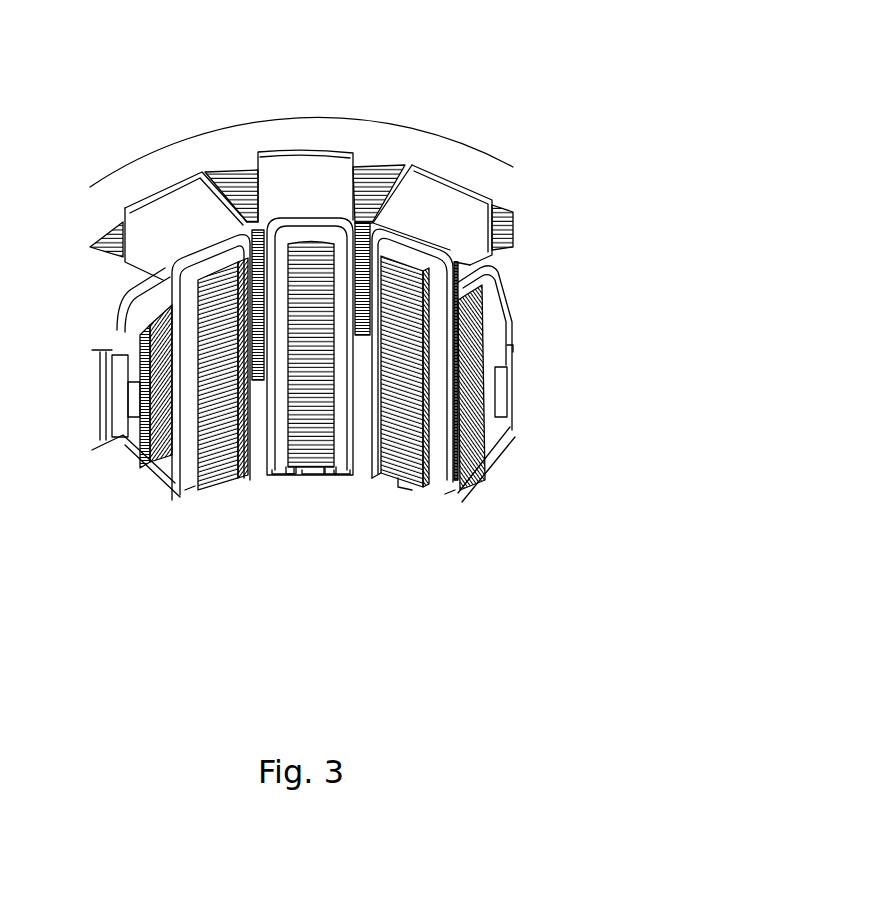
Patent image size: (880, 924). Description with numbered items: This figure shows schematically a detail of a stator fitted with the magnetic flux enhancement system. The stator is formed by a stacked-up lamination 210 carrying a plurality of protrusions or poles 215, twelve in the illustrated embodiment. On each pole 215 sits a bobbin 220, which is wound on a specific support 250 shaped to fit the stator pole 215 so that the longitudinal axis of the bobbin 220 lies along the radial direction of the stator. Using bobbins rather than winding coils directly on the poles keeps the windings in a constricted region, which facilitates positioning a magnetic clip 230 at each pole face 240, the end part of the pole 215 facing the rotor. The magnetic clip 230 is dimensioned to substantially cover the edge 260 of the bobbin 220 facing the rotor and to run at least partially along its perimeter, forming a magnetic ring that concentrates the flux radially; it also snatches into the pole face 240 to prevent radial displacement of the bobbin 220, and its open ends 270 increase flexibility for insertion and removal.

The stacked-up lamination 210 is at (125, 152).
The bobbin 220 is at (289, 329).
The magnetic clip 230 is at (351, 211).
The support 250 is at (478, 190).
The edge of the bobbin 260 is at (503, 397).
The open ends 270 is at (284, 491).
The pole 215 is at (405, 504).
The pole face 240 is at (314, 480).